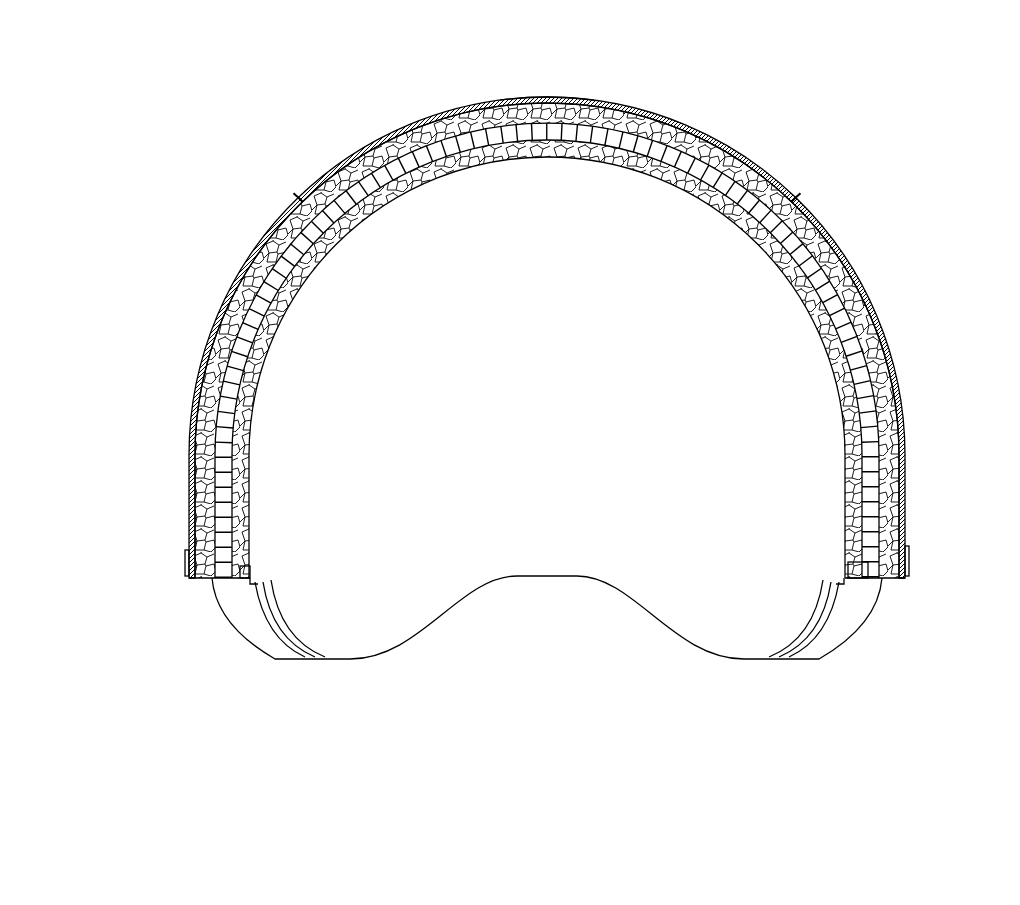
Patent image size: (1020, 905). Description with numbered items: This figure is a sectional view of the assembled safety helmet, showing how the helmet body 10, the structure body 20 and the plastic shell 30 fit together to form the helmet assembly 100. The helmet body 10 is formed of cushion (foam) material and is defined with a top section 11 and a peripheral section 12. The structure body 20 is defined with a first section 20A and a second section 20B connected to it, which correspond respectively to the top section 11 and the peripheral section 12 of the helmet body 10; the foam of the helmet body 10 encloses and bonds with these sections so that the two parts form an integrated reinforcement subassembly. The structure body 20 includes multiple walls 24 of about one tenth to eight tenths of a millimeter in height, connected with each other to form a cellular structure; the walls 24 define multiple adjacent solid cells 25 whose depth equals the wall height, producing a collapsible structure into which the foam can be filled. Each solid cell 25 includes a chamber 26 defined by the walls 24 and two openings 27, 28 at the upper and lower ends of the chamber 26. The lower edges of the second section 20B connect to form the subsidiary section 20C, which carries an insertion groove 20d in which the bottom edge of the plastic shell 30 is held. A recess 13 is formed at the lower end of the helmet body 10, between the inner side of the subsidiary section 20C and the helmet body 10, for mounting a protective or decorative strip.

The helmet assembly 100 is at (858, 184).
The helmet body 10 is at (546, 408).
The top section 11 is at (547, 100).
The peripheral section 12 is at (212, 392).
The recess 13 is at (240, 582).
The structure body 20 is at (877, 279).
The first section 20A is at (612, 116).
The second section 20B is at (913, 457).
The subsidiary section 20C is at (905, 578).
The insertion groove 20d is at (185, 556).
The wall 24 is at (745, 182).
The solid cell 25 is at (501, 110).
The chamber 26 is at (452, 176).
The opening 27 is at (322, 190).
The opening 28 is at (363, 210).
The plastic shell 30 is at (571, 305).